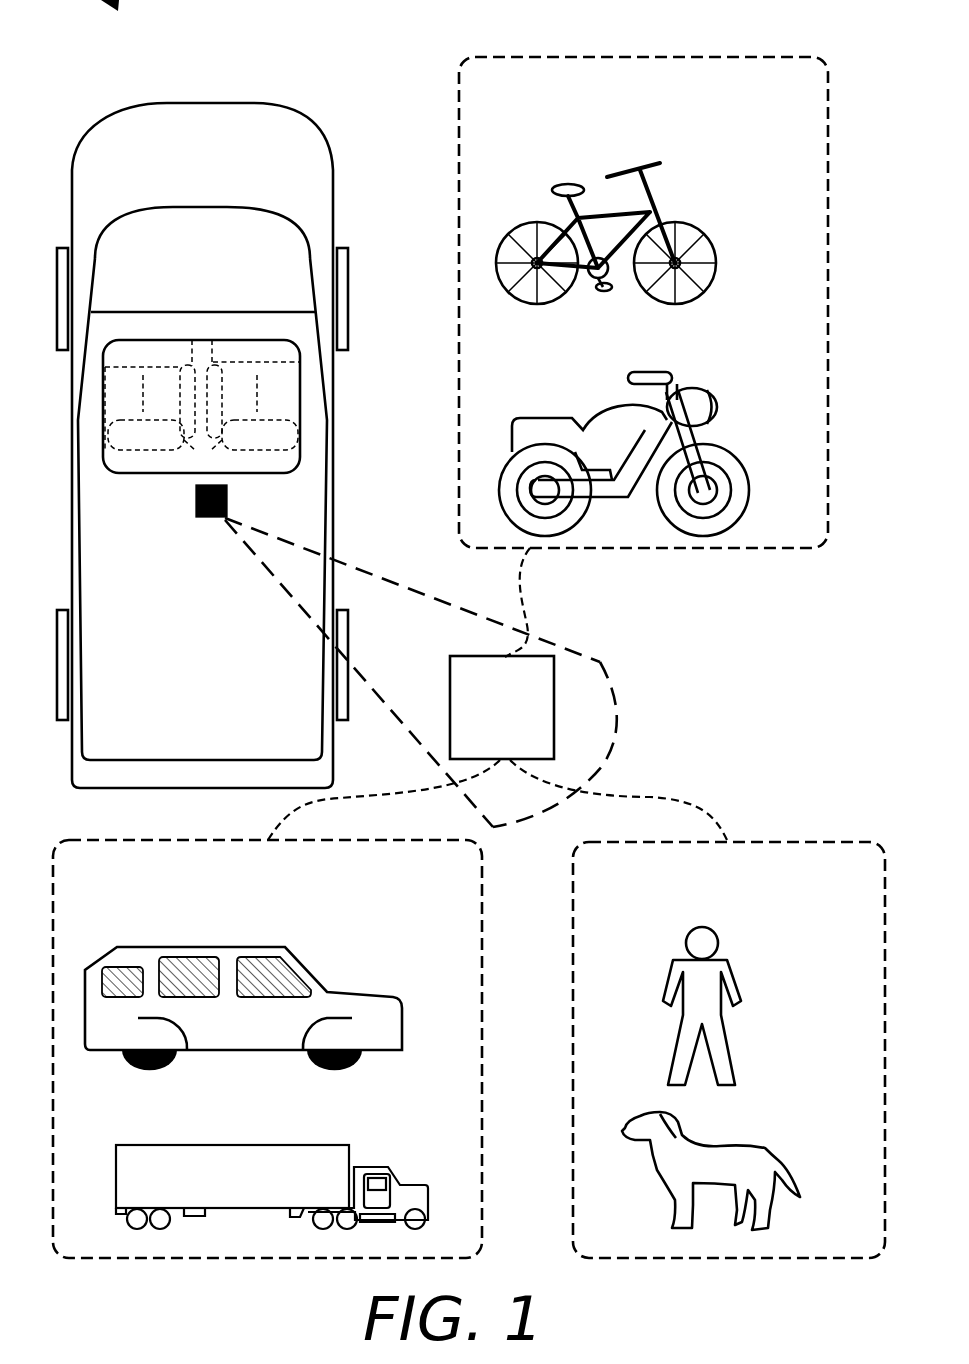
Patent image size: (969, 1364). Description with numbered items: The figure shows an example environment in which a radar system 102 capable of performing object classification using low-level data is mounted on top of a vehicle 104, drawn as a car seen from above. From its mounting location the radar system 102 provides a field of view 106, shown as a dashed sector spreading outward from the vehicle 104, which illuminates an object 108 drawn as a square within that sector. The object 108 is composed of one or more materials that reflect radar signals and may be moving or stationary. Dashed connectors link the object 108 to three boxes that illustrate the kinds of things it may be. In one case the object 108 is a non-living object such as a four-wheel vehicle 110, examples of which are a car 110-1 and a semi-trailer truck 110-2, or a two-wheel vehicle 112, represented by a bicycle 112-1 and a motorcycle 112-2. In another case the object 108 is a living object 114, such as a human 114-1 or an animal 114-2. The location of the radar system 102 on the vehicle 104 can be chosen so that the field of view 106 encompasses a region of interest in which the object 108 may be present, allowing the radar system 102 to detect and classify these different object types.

The radar system 102 is at (212, 518).
The vehicle 104 is at (213, 102).
The field of view 106 is at (602, 663).
The object 108 is at (554, 708).
The four-wheel vehicle 110 is at (285, 901).
The car 110-1 is at (333, 992).
The semi-trailer truck 110-2 is at (272, 1145).
The two-wheel vehicle 112 is at (660, 114).
The bicycle 112-1 is at (645, 165).
The motorcycle 112-2 is at (662, 371).
The living object 114 is at (747, 902).
The human 114-1 is at (732, 968).
The animal 114-2 is at (715, 1148).